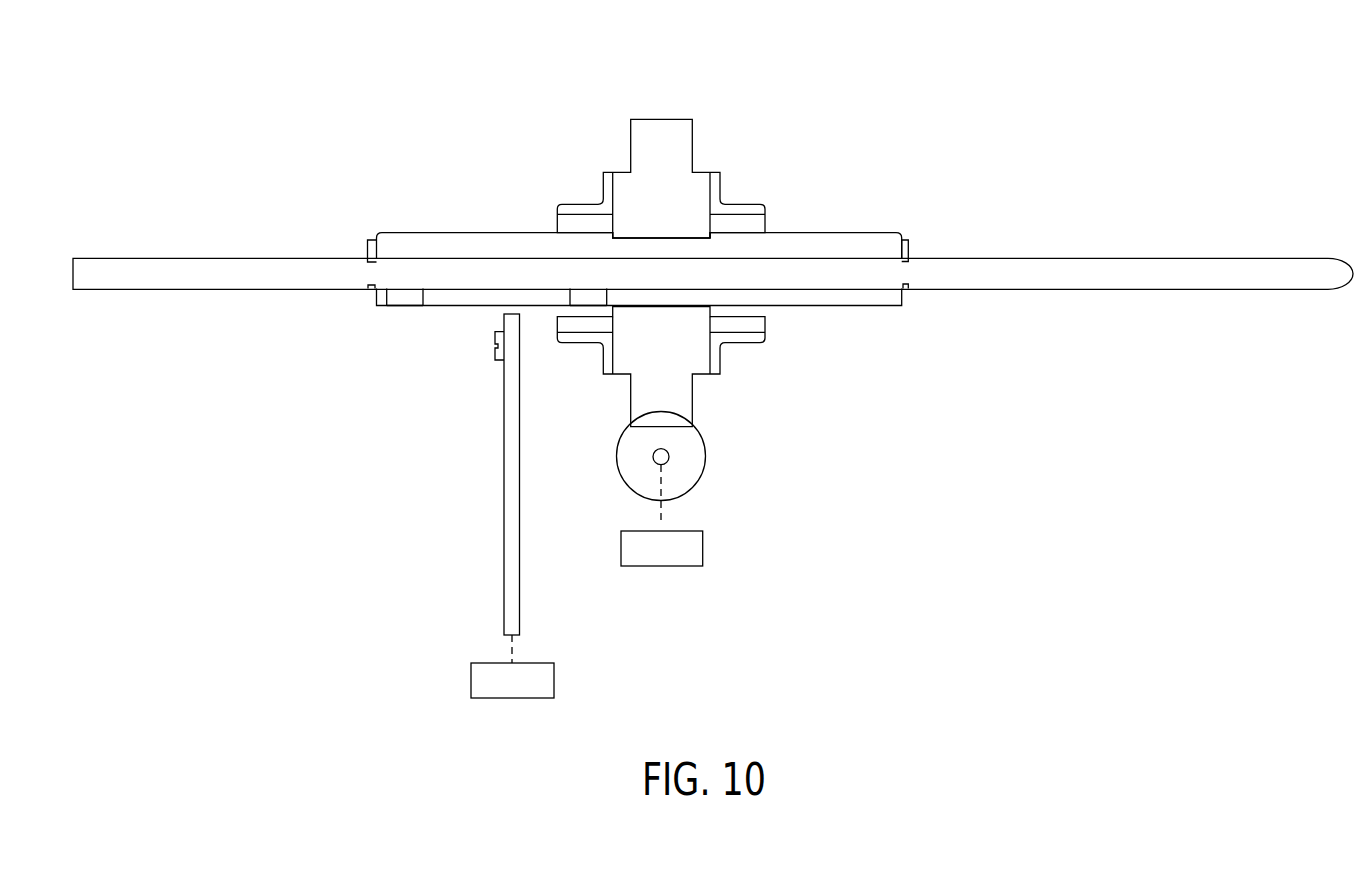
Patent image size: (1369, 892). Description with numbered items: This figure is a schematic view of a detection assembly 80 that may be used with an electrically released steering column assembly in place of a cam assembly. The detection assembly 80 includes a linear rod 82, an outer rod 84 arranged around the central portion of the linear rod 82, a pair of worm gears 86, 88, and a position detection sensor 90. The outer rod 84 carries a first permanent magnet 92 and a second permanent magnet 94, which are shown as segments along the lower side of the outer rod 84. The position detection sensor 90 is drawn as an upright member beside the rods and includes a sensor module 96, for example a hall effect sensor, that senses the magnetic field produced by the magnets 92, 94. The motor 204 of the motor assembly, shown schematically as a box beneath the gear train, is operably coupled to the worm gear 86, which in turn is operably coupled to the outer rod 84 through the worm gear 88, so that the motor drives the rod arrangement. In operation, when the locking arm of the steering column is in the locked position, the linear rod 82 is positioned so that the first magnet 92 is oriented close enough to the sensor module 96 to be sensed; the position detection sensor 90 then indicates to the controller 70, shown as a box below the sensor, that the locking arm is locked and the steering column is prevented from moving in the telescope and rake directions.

The detection assembly 80 is at (1172, 136).
The linear rod 82 is at (192, 258).
The outer rod 84 is at (425, 233).
The worm gear 86 is at (705, 470).
The worm gear 88 is at (700, 362).
The position detection sensor 90 is at (498, 537).
The first permanent magnet 92 is at (406, 299).
The second permanent magnet 94 is at (590, 293).
The sensor module 96 is at (495, 348).
The controller 70 is at (502, 692).
The motor 204 is at (646, 558).